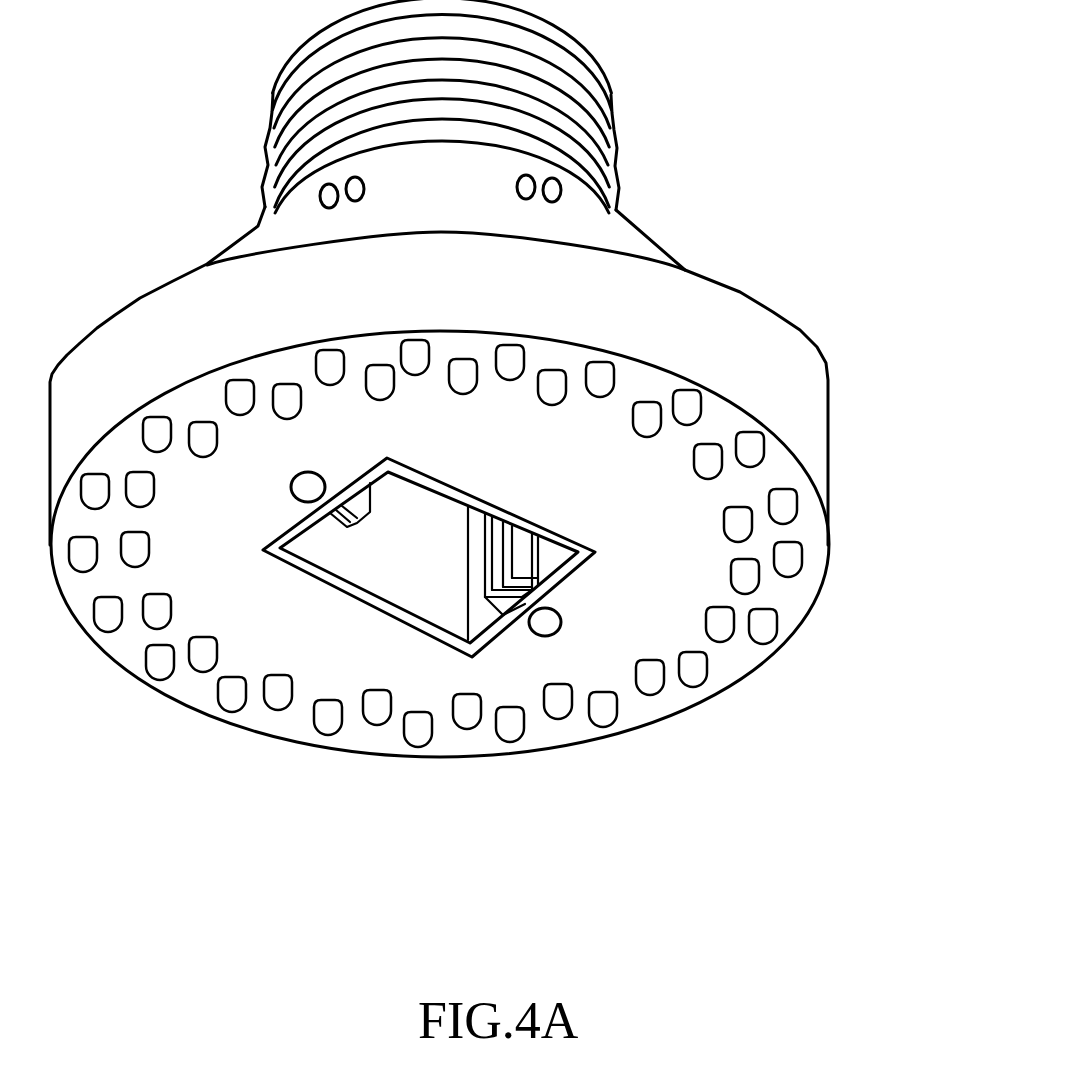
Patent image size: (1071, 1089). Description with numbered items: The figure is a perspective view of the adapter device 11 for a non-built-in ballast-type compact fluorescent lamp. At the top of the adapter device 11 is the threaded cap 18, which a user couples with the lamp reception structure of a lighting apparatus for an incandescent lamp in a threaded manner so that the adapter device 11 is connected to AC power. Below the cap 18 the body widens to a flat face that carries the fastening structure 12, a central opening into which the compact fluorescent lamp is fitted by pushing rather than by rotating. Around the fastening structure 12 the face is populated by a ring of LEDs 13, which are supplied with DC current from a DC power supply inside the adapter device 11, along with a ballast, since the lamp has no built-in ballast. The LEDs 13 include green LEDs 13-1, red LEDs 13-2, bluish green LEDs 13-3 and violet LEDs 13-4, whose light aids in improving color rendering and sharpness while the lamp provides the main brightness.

The adapter device 11 is at (737, 160).
The fastening structure 12 is at (470, 657).
The LEDs 13 is at (803, 557).
The green LEDs 13-1 is at (330, 735).
The red LEDs 13-2 is at (280, 710).
The bluish green LEDs 13-3 is at (226, 712).
The violet LEDs 13-4 is at (193, 673).
The cap 18 is at (613, 117).